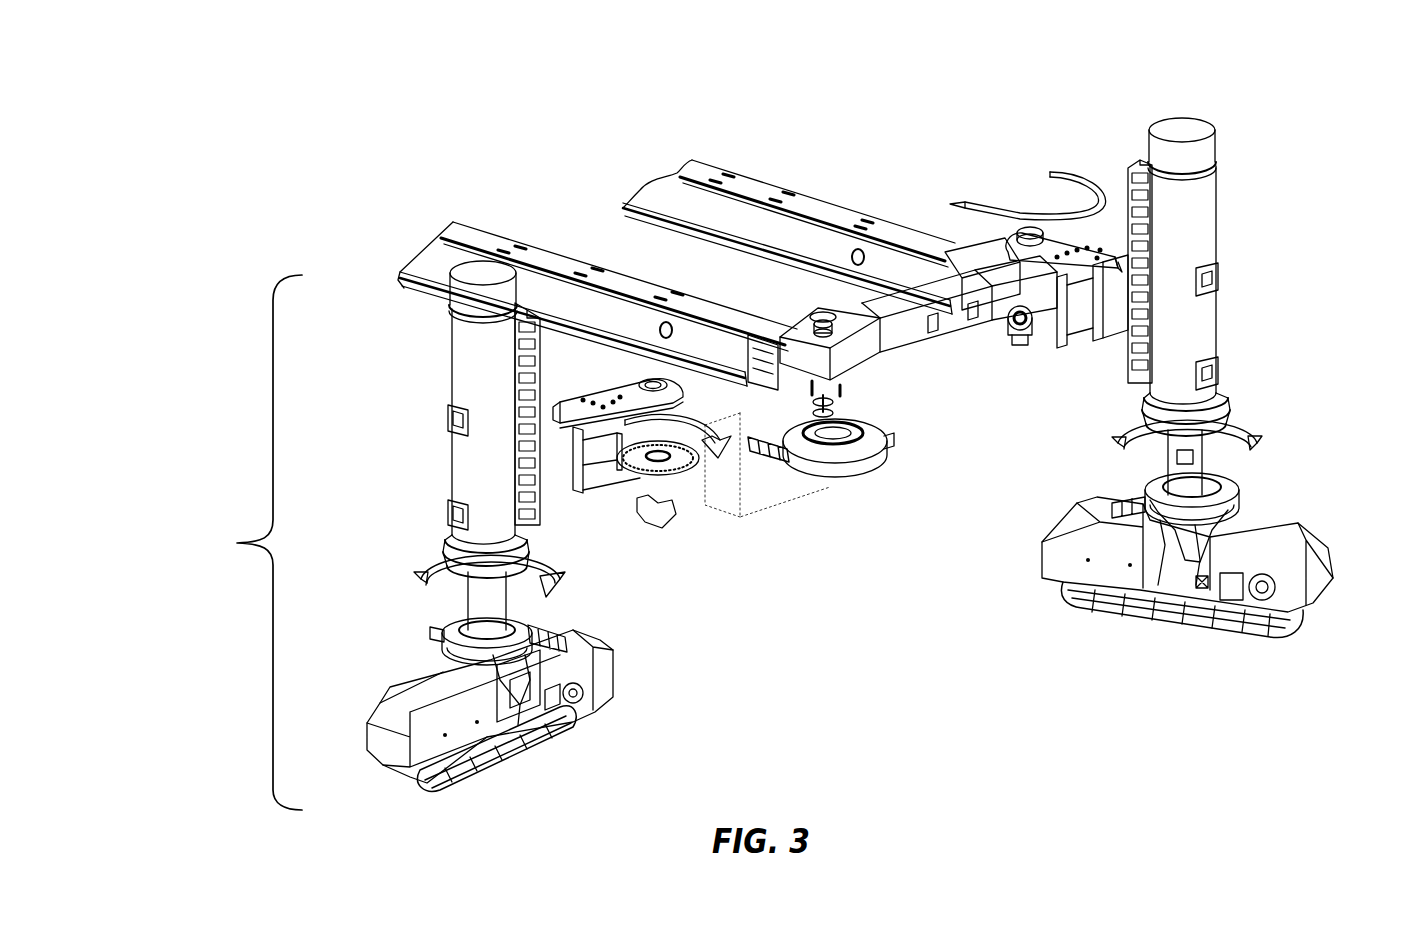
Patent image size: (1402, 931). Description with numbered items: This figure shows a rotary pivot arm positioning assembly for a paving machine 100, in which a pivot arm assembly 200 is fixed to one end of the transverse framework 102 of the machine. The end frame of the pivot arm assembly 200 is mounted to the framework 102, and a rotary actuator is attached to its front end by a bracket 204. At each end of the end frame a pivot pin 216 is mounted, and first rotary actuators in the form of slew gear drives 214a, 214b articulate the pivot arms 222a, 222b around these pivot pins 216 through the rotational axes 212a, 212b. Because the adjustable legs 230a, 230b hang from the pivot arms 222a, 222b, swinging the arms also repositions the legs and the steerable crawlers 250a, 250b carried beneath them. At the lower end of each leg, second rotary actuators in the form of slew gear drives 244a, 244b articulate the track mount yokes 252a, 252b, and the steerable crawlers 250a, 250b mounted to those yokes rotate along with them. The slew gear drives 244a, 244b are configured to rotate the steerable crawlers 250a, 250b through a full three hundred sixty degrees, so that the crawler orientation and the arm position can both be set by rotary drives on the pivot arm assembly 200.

The paving machine 100 is at (217, 116).
The transverse framework 102 is at (748, 190).
The pivot arm assembly 200 is at (240, 543).
The bracket 204 is at (913, 345).
The rotational axis 212a is at (718, 465).
The rotational axis 212b is at (1077, 170).
The slew gear drive 214a is at (860, 462).
The slew gear drive 214b is at (1040, 330).
The pivot pin 216 is at (812, 312).
The pivot arm 222a is at (588, 478).
The pivot arm 222b is at (1092, 345).
The adjustable leg 230a is at (450, 356).
The adjustable leg 230b is at (1218, 247).
The slew gear drive 244a is at (440, 645).
The slew gear drive 244b is at (1226, 503).
The steerable crawler 250a is at (600, 672).
The steerable crawler 250b is at (1040, 542).
The track mount yoke 252a is at (562, 738).
The track mount yoke 252b is at (1120, 622).